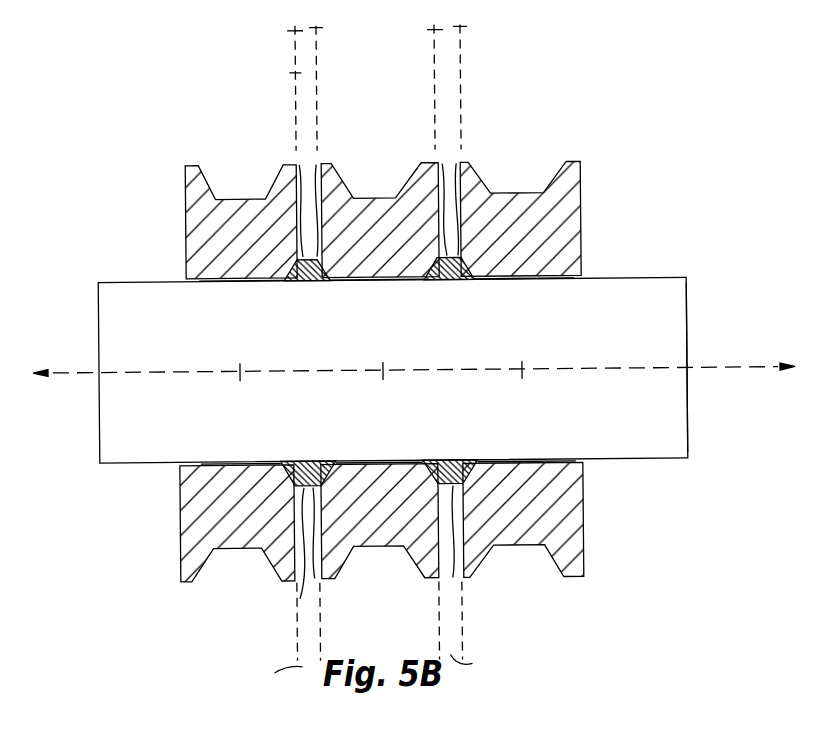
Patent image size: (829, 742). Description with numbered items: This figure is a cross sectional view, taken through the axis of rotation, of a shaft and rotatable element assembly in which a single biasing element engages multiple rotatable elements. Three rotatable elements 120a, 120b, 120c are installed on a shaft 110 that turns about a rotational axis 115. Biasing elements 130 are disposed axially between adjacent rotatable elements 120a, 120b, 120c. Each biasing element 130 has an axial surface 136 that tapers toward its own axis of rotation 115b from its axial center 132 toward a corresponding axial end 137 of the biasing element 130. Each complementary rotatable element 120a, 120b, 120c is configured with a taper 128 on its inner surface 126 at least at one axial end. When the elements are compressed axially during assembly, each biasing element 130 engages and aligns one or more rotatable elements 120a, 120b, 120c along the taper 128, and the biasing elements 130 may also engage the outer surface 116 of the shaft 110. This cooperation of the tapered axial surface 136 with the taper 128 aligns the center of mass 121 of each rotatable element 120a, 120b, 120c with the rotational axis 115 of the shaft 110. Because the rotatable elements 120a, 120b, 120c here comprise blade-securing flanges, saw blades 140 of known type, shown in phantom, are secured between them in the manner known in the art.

The shaft 110 is at (660, 347).
The rotational axis 115 is at (89, 372).
The axis of rotation 115b is at (351, 365).
The center of mass 121 is at (524, 373).
The outer surface 116 is at (668, 280).
The rotatable element 120a is at (204, 233).
The rotatable element 120b is at (365, 205).
The rotatable element 120c is at (583, 173).
The inner surface 126 is at (224, 282).
The taper 128 is at (290, 262).
The axial center 132 is at (301, 164).
The biasing element 130 is at (463, 483).
The axial surface 136 is at (476, 249).
The axial end 137 is at (200, 516).
The saw blade 140 is at (290, 72).